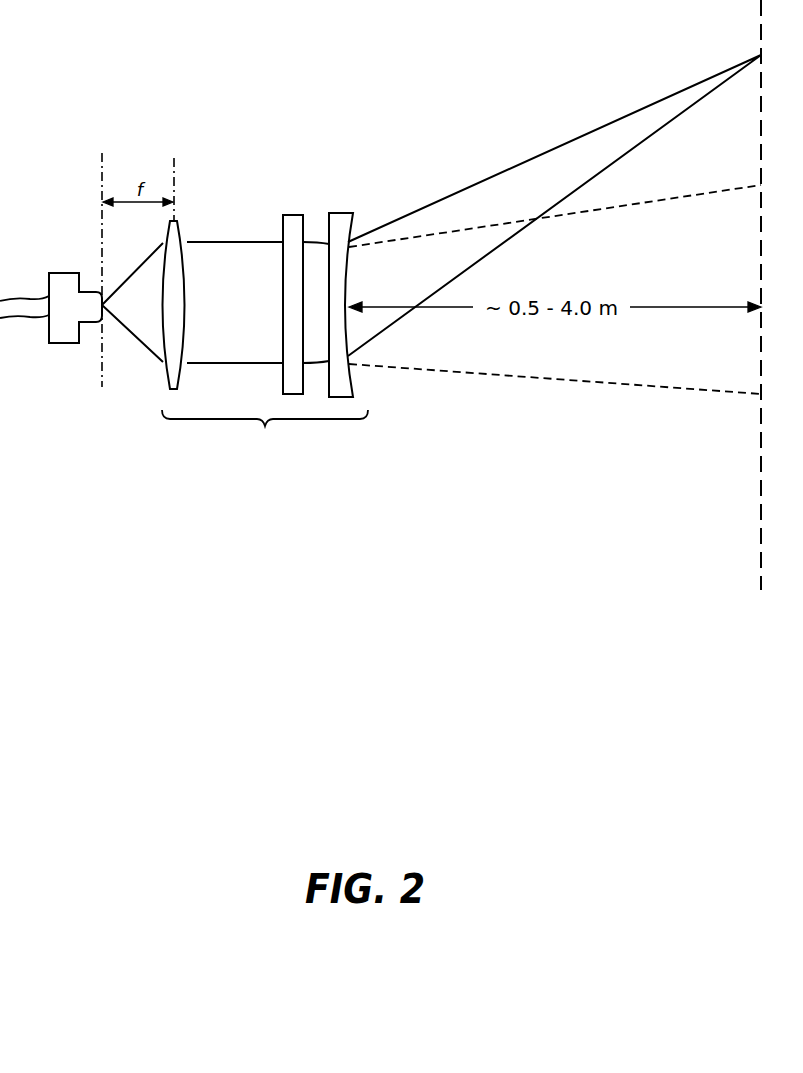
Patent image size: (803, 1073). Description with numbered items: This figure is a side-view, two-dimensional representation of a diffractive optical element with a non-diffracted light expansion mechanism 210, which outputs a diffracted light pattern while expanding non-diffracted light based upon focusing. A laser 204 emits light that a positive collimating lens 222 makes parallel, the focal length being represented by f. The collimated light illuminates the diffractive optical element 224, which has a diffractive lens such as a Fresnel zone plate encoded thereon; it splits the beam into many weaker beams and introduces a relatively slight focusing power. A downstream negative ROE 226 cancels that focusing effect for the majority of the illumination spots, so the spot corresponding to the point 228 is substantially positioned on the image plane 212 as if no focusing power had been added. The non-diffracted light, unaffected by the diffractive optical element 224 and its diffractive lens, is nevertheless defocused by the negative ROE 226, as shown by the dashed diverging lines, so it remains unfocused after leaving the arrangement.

The laser 204 is at (60, 332).
The non-diffracted light expansion mechanism 210 is at (265, 437).
The image plane 212 is at (758, 517).
The positive collimating lens 222 is at (175, 242).
The diffractive optical element 224 is at (292, 222).
The negative ROE 226 is at (338, 222).
The point 228 is at (758, 55).